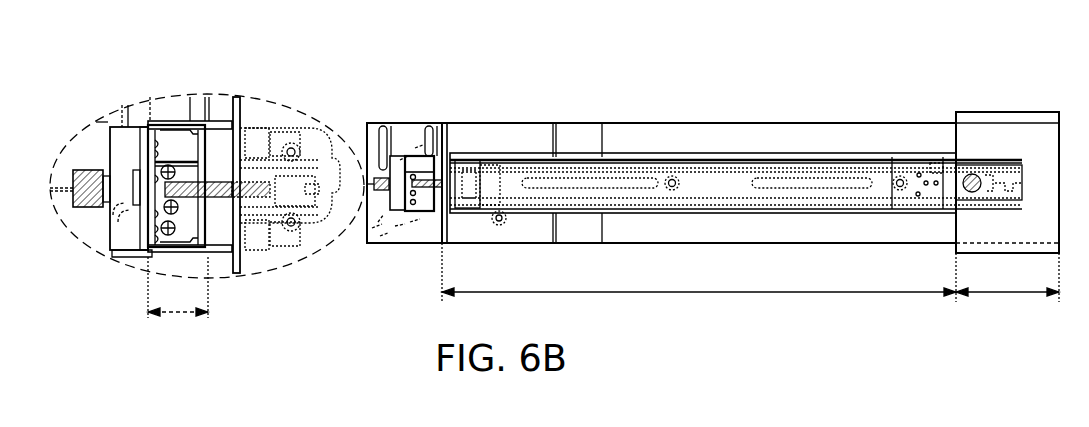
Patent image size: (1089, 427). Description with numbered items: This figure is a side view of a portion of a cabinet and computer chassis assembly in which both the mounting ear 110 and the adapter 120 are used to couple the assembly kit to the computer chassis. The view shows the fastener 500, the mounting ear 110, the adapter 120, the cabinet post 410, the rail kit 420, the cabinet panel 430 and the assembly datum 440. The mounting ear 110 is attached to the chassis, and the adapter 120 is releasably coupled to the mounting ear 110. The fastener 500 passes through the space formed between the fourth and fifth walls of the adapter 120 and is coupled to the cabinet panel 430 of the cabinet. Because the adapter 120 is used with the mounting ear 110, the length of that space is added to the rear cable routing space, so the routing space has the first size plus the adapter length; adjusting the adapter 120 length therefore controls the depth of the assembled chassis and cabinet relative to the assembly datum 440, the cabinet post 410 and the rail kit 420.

The cabinet post 410 is at (493, 133).
The assembly datum 440 is at (435, 220).
The fastener 500 is at (85, 170).
The mounting ear 110 is at (125, 217).
The adapter 120 is at (173, 135).
The cabinet panel 430 is at (237, 103).
The rail kit 420 is at (307, 150).